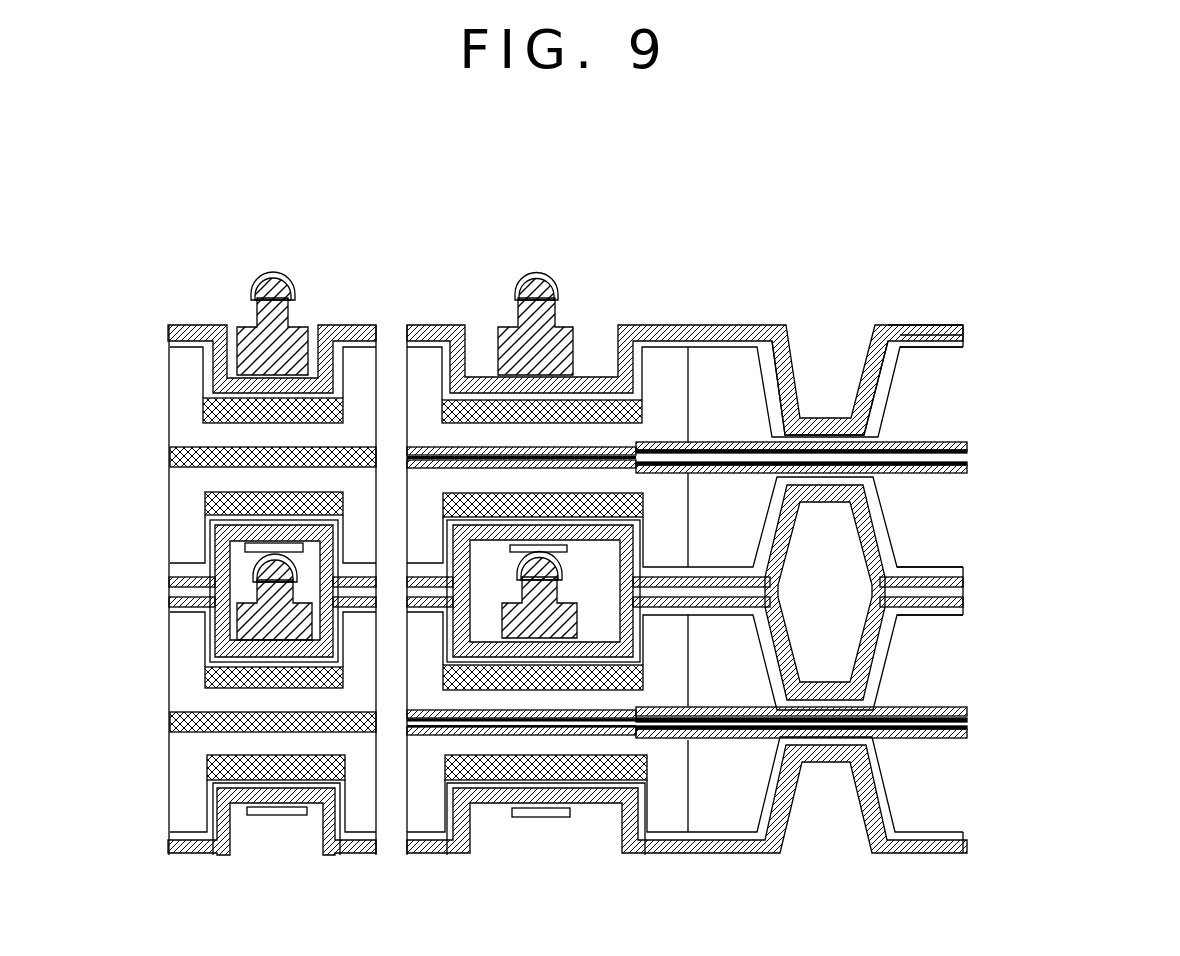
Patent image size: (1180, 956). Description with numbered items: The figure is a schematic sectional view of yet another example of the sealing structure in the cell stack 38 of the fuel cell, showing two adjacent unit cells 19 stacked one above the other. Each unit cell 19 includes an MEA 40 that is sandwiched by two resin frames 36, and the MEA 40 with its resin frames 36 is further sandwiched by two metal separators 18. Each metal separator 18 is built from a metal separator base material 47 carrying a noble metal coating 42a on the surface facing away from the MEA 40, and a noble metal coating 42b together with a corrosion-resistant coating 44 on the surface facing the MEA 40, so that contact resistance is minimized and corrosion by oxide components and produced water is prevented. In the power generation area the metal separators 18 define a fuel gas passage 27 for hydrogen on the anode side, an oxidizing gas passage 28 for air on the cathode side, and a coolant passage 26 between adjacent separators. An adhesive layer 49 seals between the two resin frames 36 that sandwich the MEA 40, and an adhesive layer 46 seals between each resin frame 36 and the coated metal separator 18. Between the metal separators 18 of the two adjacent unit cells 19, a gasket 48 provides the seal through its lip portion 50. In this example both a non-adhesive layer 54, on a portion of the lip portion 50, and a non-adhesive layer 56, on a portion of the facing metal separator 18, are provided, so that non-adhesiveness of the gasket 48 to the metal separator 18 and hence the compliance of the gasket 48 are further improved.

The cell stack 38 is at (707, 192).
The non-adhesive layer 54 is at (258, 282).
The lip portion 50 is at (278, 278).
The gasket 48 is at (298, 312).
The adhesive layer 46 is at (203, 412).
The fuel gas passage 27 is at (715, 330).
The coolant passage 26 is at (820, 340).
The noble metal coating 42a is at (933, 327).
The metal separator base material 47 is at (965, 326).
The noble metal coating 42b is at (965, 337).
The corrosion-resistant coating 44 is at (965, 350).
The metal separator 18 is at (1062, 297).
The resin frame 36 is at (185, 381).
The adhesive layer 49 is at (170, 455).
The MEA 40 is at (972, 443).
The unit cell 19 is at (1098, 860).
The non-adhesive layer 56 is at (247, 547).
The oxidizing gas passage 28 is at (857, 532).